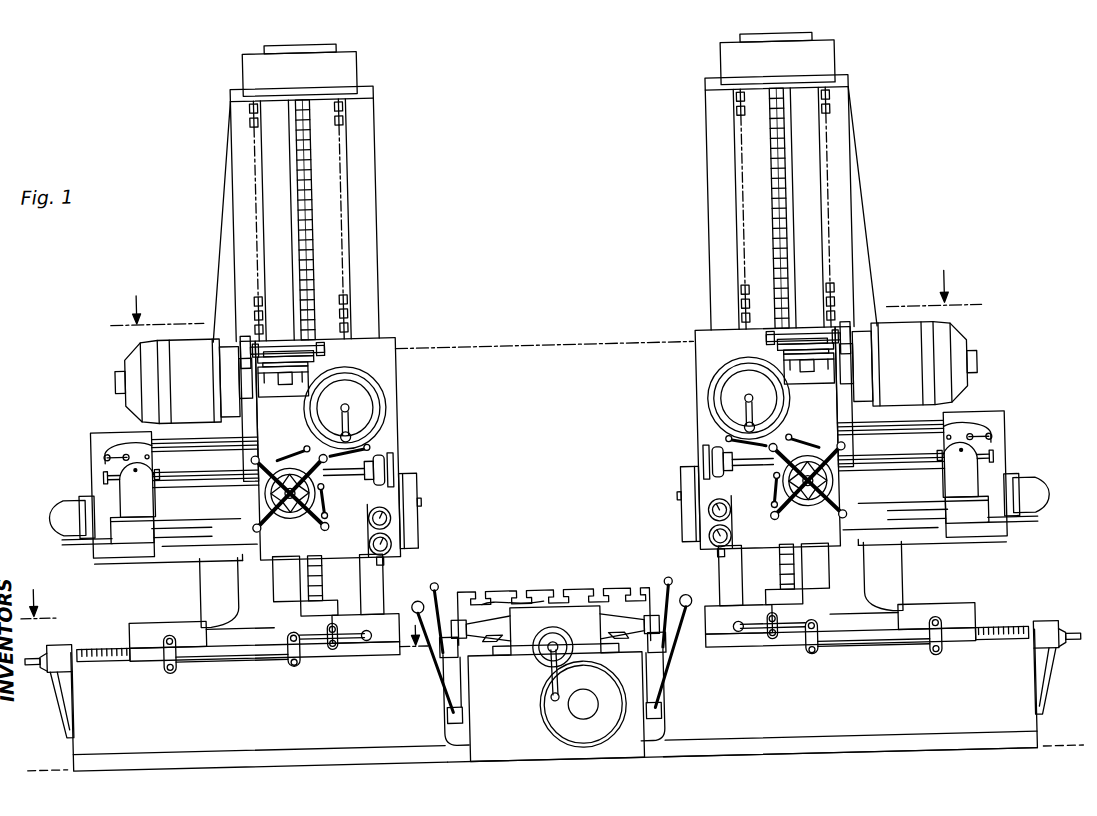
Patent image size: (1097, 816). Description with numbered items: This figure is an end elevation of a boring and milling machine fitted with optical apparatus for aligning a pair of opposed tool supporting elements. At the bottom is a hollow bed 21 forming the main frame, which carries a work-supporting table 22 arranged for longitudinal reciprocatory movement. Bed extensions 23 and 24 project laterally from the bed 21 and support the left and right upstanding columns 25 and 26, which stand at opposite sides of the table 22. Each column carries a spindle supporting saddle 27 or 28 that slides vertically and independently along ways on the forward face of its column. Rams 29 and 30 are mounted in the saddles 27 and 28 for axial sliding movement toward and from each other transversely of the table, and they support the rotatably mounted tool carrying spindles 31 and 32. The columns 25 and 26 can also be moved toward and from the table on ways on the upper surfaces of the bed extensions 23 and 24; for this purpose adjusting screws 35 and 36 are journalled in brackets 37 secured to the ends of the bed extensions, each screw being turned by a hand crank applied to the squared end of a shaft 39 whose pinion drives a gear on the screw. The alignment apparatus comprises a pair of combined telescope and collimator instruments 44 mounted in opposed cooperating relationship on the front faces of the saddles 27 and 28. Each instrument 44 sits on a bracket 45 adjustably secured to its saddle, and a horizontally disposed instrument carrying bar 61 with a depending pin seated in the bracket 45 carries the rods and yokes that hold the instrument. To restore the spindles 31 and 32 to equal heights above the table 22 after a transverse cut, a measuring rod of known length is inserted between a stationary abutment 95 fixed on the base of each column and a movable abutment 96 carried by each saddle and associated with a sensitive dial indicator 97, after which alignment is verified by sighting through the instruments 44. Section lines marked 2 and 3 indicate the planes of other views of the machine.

The bed 21 is at (514, 741).
The work-supporting table 22 is at (534, 592).
The left bed extension 23 is at (243, 738).
The right bed extension 24 is at (750, 738).
The left column 25 is at (382, 251).
The right column 26 is at (714, 210).
The left saddle 27 is at (398, 397).
The right saddle 28 is at (700, 389).
The left ram 29 is at (400, 463).
The right ram 30 is at (698, 467).
The left tool carrying spindle 31 is at (419, 497).
The right tool carrying spindle 32 is at (682, 496).
The left adjusting screw 35 is at (104, 629).
The right adjusting screw 36 is at (999, 629).
The bracket 37 is at (54, 624).
The shaft 39 is at (33, 639).
The combined telescope and collimator instrument 44 is at (293, 334).
The bracket 45 is at (274, 382).
The instrument carrying bar 61 is at (318, 354).
The stationary abutment 95 is at (374, 626).
The movable abutment 96 is at (383, 556).
The dial indicator 97 is at (363, 540).
The section line 2- 2 is at (546, 295).
The section line 3- 3 is at (224, 624).